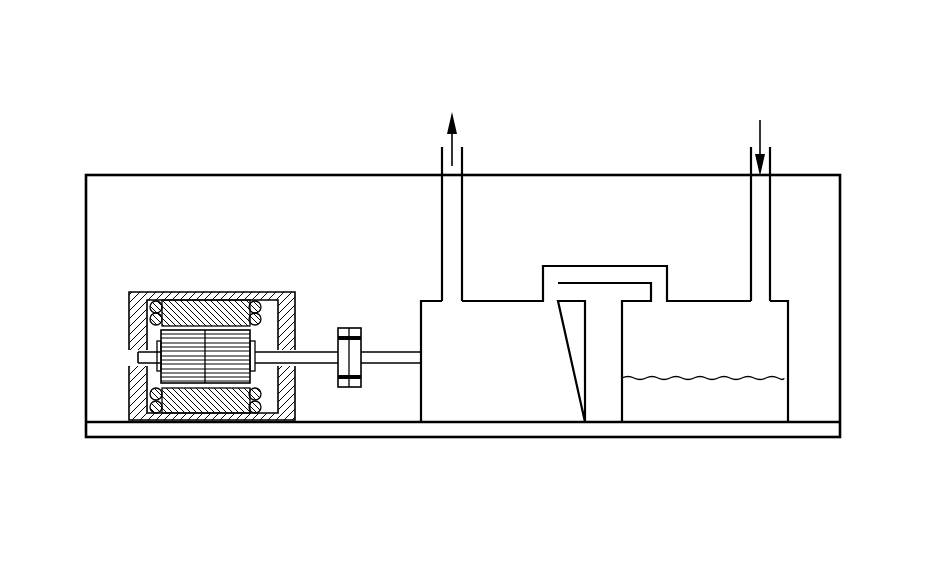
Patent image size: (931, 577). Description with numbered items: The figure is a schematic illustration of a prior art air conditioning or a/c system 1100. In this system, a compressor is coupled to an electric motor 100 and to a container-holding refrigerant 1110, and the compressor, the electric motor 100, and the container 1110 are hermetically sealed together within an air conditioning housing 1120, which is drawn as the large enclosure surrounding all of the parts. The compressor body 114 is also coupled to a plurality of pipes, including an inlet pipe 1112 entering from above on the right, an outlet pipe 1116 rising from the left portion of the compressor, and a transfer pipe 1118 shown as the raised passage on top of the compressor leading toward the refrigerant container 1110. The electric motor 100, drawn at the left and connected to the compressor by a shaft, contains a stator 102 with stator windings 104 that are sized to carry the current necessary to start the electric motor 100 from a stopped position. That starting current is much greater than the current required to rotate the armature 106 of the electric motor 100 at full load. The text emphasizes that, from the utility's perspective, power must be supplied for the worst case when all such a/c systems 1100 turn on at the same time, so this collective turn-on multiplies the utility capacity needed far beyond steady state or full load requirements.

The air conditioning system 1100 is at (238, 82).
The air conditioning housing 1120 is at (195, 175).
The electric motor 100 is at (143, 274).
The stator 102 is at (212, 308).
The stator windings 104 is at (253, 306).
The armature 106 is at (157, 347).
The pump housing 114 is at (486, 298).
The outlet pipe 1116 is at (460, 143).
The inlet pipe 1112 is at (754, 142).
The transfer pipe 1118 is at (600, 266).
The container-holding refrigerant 1110 is at (788, 330).